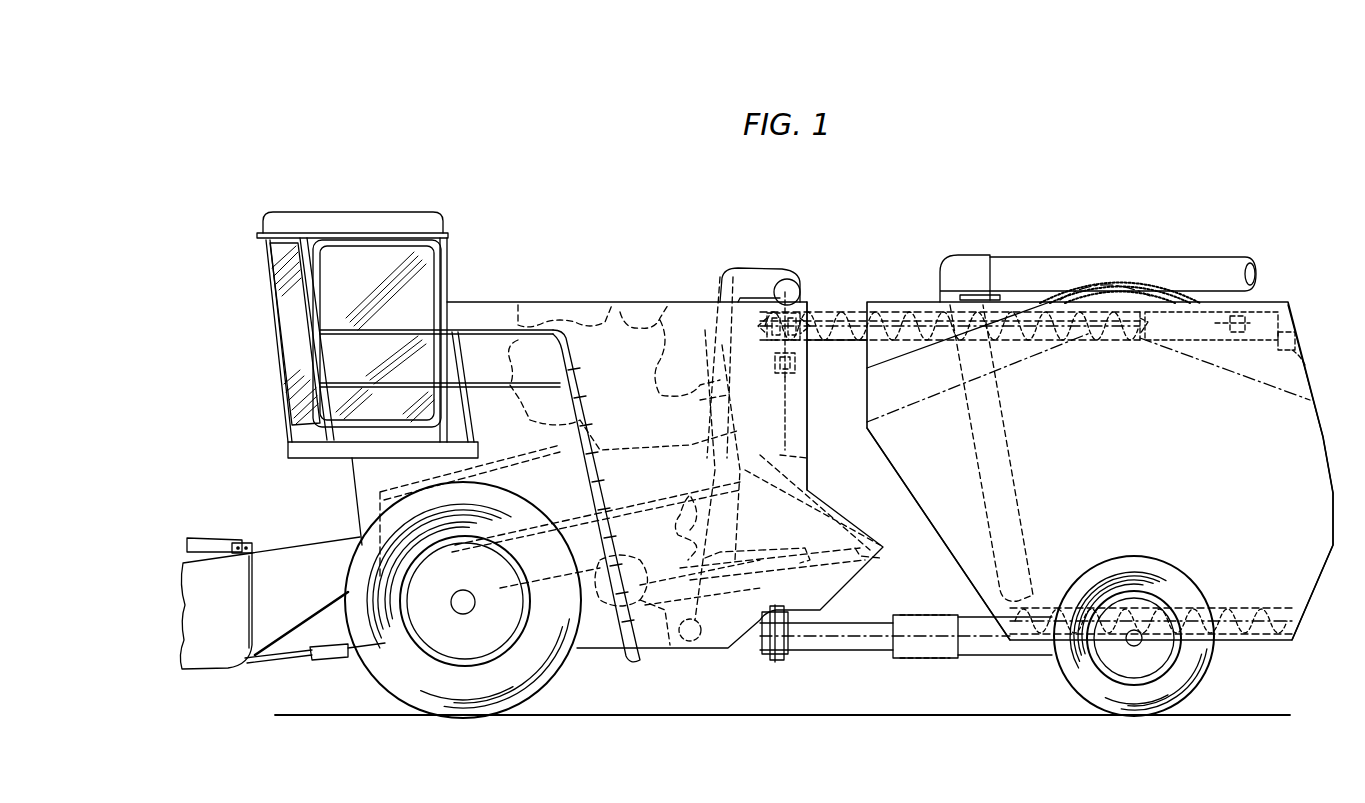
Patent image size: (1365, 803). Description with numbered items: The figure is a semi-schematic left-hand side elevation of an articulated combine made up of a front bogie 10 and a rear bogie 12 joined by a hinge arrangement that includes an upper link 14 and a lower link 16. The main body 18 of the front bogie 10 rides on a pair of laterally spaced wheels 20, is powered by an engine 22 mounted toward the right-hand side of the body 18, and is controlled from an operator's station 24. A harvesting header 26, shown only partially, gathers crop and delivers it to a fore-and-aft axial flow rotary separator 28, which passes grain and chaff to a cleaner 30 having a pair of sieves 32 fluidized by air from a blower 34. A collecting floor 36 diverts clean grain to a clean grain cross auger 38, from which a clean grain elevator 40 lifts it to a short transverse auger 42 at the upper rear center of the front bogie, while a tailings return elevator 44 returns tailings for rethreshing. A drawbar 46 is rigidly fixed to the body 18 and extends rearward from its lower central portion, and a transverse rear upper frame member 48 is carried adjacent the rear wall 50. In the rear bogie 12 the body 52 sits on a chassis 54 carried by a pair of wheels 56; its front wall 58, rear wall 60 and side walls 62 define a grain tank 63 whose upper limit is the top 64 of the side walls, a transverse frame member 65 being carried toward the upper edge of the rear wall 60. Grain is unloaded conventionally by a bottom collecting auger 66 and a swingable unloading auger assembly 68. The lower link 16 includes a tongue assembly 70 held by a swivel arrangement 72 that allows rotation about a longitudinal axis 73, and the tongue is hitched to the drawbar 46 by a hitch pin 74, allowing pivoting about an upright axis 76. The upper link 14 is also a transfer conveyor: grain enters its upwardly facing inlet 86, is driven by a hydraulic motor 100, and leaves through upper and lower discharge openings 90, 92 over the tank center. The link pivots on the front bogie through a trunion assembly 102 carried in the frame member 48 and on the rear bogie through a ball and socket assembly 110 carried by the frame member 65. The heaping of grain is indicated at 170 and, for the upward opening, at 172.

The front bogie 10 is at (515, 262).
The rear bogie 12 is at (926, 225).
The upper link 14 is at (842, 300).
The lower link 16 is at (833, 652).
The main body 18 is at (595, 302).
The wheels 20 is at (562, 664).
The engine 22 is at (652, 328).
The operator's station 24 is at (365, 211).
The harvesting header 26 is at (222, 540).
The axial flow rotary separator 28 is at (510, 447).
The cleaner 30 is at (858, 572).
The sieves 32 is at (818, 546).
The blower 34 is at (665, 648).
The collecting floor 36 is at (752, 600).
The clean grain cross auger 38 is at (690, 642).
The clean grain elevator 40 is at (722, 485).
The transverse auger 42 is at (758, 278).
The tailings return elevator 44 is at (678, 540).
The drawbar 46 is at (764, 657).
The rear upper frame member 48 is at (785, 388).
The rear wall 50 is at (808, 432).
The body 52 is at (902, 300).
The chassis 54 is at (995, 658).
The wheels 56 is at (1208, 680).
The front wall 58 is at (900, 480).
The rear wall 60 is at (1318, 425).
The side walls 62 is at (1134, 534).
The grain tank 63 is at (1118, 438).
The top of the side walls 64 is at (932, 298).
The frame member 65 is at (1306, 368).
The bottom collecting auger 66 is at (1248, 612).
The unloading auger assembly 68 is at (1052, 257).
The tongue assembly 70 is at (878, 653).
The swivel arrangement 72 is at (930, 658).
The longitudinal axis 73 is at (878, 632).
The hitch pin 74 is at (780, 655).
The upright axis 76 is at (808, 460).
The inlet 86 is at (802, 298).
The upper discharge opening 90 is at (1132, 290).
The lower discharge opening 92 is at (1085, 342).
The hydraulic motor 100 is at (716, 275).
The trunion assembly 102 is at (798, 347).
The ball and socket assembly 110 is at (1296, 331).
The initial grain heap 170 is at (884, 428).
The grain level at upward opening 172 is at (898, 366).